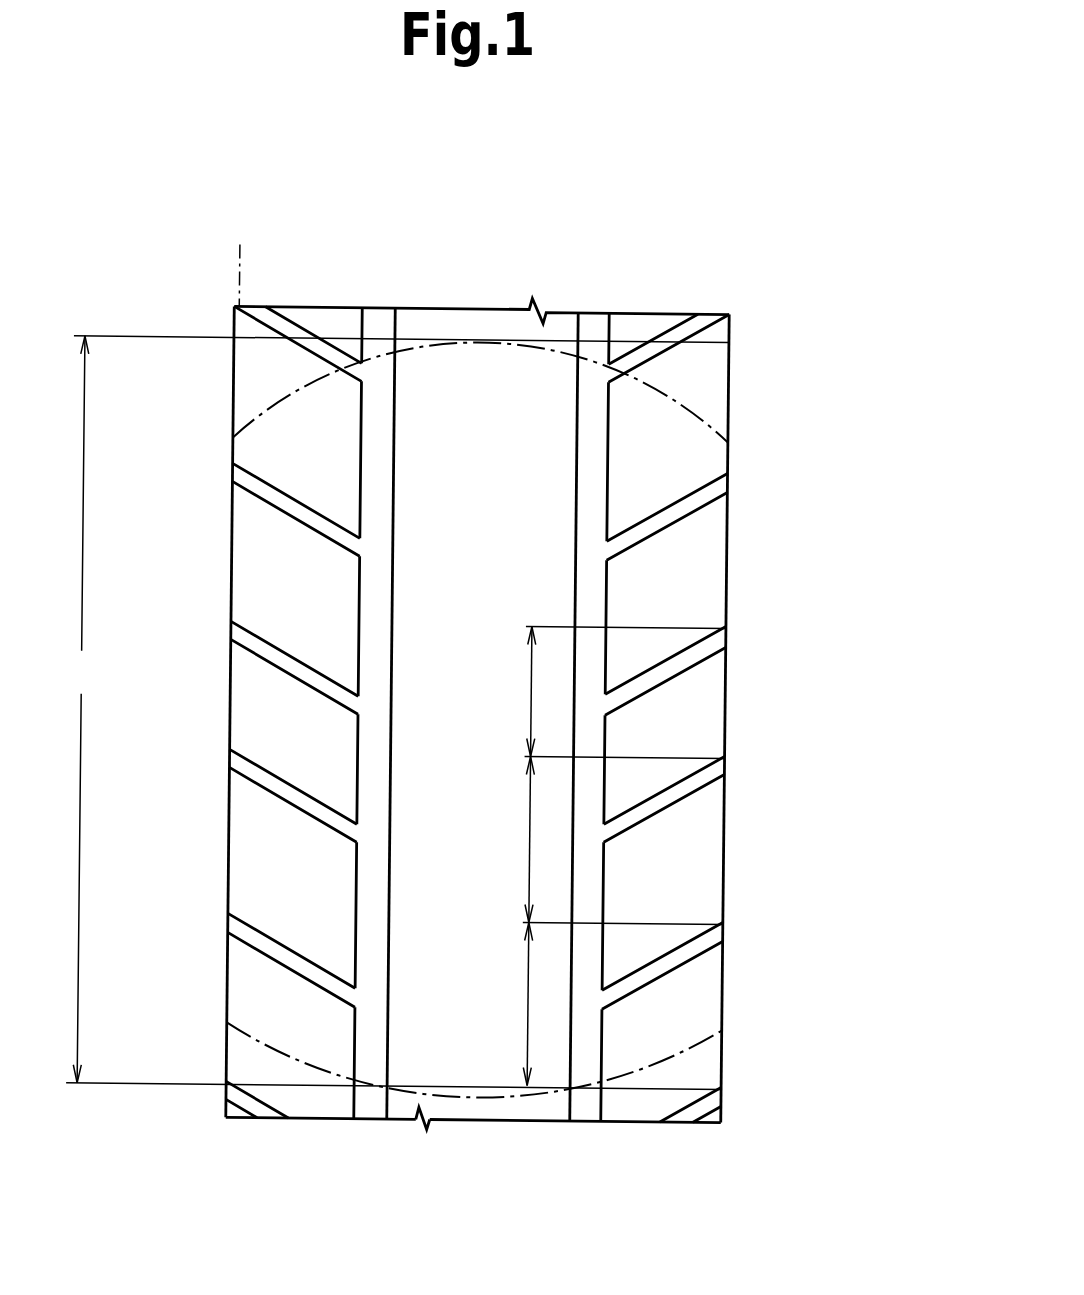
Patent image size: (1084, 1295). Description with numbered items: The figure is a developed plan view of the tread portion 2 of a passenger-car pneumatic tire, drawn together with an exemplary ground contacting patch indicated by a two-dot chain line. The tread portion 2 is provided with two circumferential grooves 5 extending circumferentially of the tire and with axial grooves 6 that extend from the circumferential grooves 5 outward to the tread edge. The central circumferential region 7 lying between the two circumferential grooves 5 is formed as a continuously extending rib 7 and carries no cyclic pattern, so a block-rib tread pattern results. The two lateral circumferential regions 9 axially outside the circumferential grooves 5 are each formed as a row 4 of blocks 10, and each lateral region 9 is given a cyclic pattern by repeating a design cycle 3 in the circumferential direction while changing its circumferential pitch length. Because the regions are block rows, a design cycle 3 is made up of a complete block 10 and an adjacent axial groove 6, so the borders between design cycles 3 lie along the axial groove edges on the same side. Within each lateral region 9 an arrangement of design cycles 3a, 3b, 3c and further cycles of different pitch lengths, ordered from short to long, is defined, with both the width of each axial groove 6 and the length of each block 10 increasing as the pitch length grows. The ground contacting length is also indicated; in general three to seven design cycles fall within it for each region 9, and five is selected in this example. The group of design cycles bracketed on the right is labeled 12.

The tread portion 2 is at (670, 285).
The design cycle 3 is at (808, 328).
The design cycle 3a is at (808, 640).
The design cycle 3b is at (808, 778).
The design cycle 3c is at (808, 943).
The row of blocks 4 is at (504, 1212).
The circumferential groove 5 is at (375, 307).
The axial groove 6 is at (686, 334).
The central circumferential region (rib) 7 is at (490, 1147).
The lateral circumferential region 9 is at (326, 1144).
The block 10 is at (716, 393).
The pitch variation tread pattern 12 is at (885, 323).